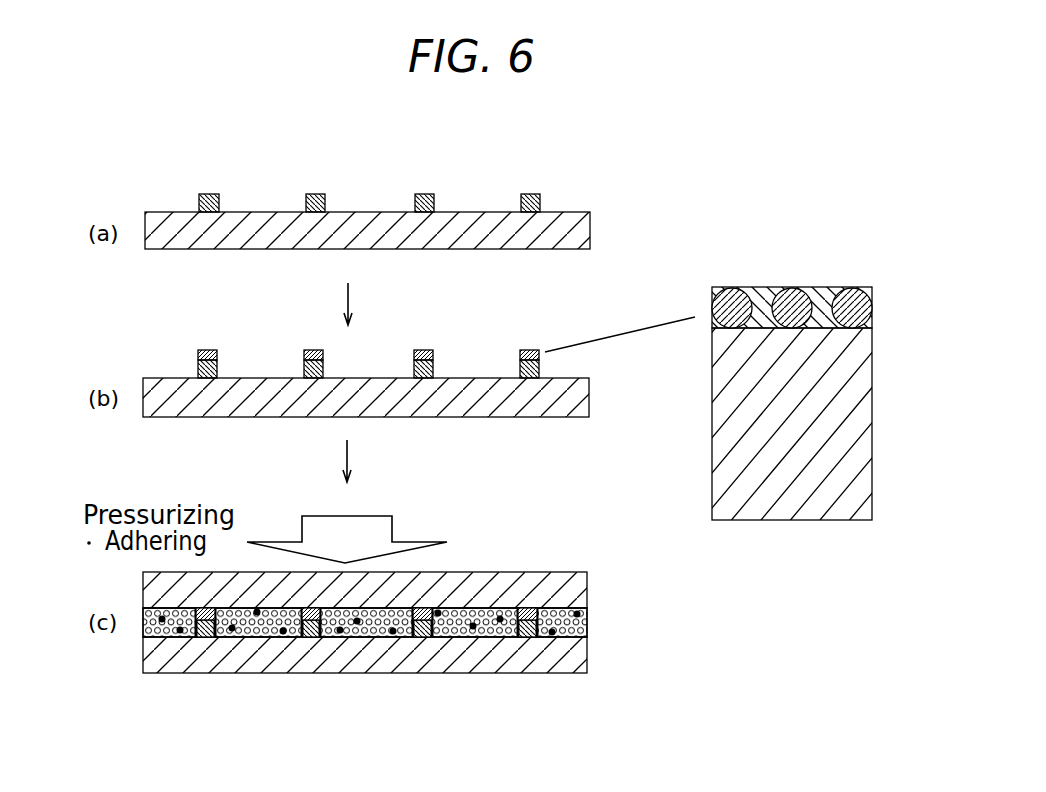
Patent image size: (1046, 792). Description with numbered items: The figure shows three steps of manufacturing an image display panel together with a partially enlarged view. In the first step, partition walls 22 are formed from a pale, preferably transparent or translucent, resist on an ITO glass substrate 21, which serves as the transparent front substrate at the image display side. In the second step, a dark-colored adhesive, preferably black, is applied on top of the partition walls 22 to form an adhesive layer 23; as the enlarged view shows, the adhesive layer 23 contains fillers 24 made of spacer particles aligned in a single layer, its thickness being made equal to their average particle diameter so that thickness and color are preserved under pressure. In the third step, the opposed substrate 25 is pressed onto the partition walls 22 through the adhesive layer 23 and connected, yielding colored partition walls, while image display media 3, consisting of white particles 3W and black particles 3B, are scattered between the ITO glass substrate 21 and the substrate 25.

The ITO glass substrate 21 is at (568, 228).
The partition walls 22 is at (540, 198).
The adhesive layer 23 is at (530, 350).
The fillers 24 is at (850, 305).
The substrate 25 is at (557, 583).
The image display media 3 is at (365, 692).
The white particle 3W is at (447, 634).
The black particle 3B is at (473, 633).